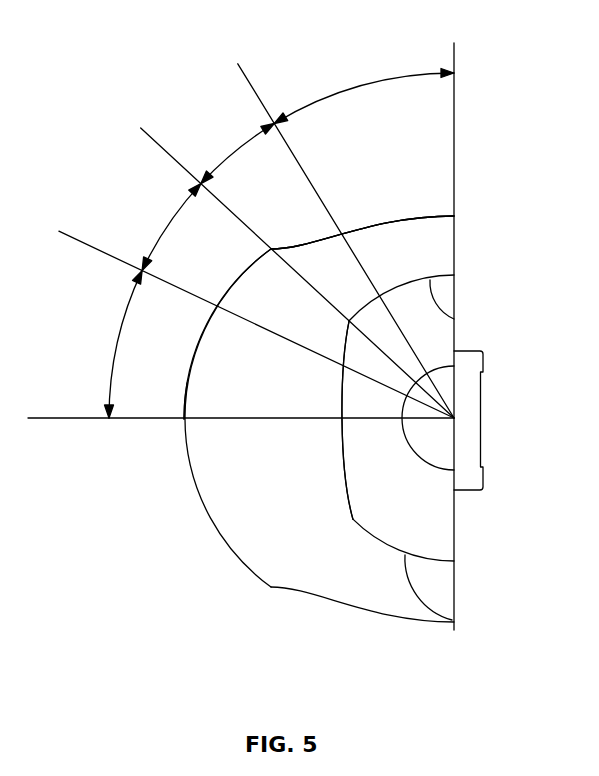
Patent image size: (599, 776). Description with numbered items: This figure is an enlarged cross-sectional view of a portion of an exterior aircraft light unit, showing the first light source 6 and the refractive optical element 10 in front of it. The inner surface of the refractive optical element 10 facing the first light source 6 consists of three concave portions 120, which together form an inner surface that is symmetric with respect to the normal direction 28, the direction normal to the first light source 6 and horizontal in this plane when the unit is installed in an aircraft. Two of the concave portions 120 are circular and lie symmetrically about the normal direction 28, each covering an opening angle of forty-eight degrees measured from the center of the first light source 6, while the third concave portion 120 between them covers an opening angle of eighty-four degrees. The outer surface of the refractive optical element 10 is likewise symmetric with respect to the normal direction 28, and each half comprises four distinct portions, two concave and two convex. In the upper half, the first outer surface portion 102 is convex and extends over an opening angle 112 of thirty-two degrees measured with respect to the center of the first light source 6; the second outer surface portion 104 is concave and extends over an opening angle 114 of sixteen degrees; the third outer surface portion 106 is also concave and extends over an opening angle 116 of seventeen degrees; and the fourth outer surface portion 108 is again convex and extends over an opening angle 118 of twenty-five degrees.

The first light source 6 is at (485, 418).
The refractive optical element 10 is at (232, 550).
The normal direction 28 is at (62, 420).
The first outer surface portion 102 is at (415, 218).
The second outer surface portion 104 is at (304, 247).
The third outer surface portion 106 is at (245, 271).
The fourth outer surface portion 108 is at (187, 383).
The opening angle of the first outer surface portion 112 is at (353, 88).
The opening angle of the second outer surface portion 114 is at (248, 138).
The opening angle of the third outer surface portion 116 is at (165, 230).
The opening angle of the fourth outer surface portion 118 is at (118, 340).
The concave portion 120 is at (455, 319).